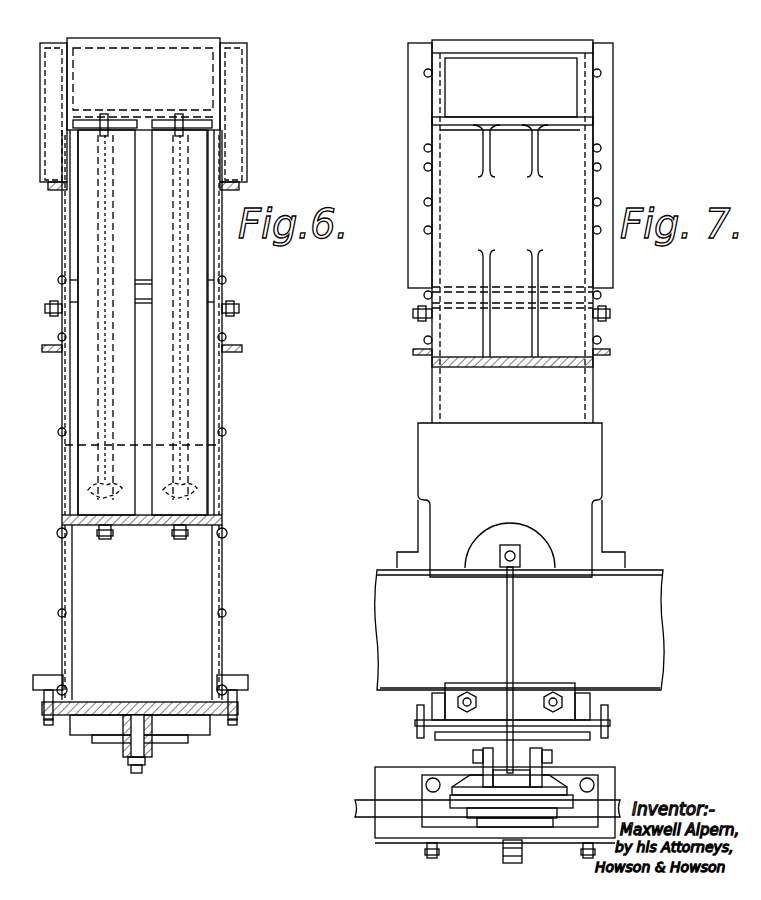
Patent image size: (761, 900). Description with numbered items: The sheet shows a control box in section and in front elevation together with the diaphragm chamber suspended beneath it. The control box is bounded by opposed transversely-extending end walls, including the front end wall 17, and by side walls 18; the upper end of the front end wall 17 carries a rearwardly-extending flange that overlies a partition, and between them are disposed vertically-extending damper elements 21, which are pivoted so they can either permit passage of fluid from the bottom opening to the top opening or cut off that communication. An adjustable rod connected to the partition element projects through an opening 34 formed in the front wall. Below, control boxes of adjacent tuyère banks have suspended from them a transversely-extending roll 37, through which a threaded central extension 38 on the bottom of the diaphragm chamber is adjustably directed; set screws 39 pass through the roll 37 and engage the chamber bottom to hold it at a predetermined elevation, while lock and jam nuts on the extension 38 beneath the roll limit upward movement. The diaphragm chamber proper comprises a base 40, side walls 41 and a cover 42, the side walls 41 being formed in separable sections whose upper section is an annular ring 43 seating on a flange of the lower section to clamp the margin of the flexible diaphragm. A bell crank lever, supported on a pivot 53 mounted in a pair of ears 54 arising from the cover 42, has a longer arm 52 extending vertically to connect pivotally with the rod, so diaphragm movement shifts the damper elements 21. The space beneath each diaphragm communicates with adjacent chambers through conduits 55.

In FIG. 7, the front end wall 17 is at (512, 231).
In FIG. 6, the side walls 18 is at (62, 388).
In FIG. 6, the damper elements 21 is at (150, 503).
In FIG. 7, the opening 34 is at (515, 548).
In FIG. 7, the roll 37 is at (470, 838).
In FIG. 7, the threaded central extension 38 is at (503, 860).
In FIG. 7, the set screws 39 is at (425, 851).
In FIG. 7, the base 40 is at (530, 827).
In FIG. 7, the side walls 41 is at (560, 810).
In FIG. 7, the cover 42 is at (520, 790).
In FIG. 7, the annular ring 43 is at (565, 798).
In FIG. 7, the longer arm 52 is at (515, 630).
In FIG. 7, the pivot 53 is at (473, 757).
In FIG. 7, the ears 54 is at (488, 750).
In FIG. 7, the conduits 55 is at (620, 808).